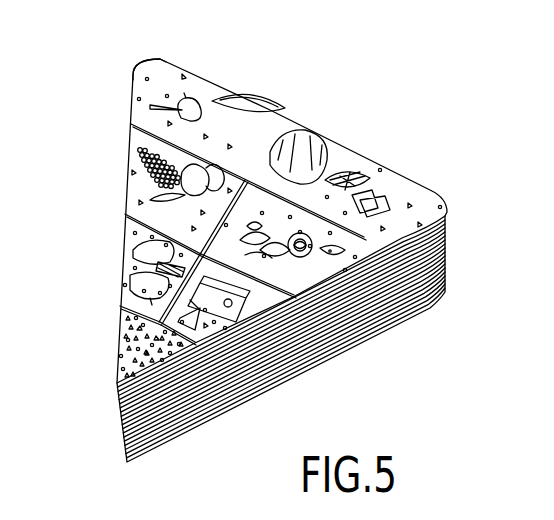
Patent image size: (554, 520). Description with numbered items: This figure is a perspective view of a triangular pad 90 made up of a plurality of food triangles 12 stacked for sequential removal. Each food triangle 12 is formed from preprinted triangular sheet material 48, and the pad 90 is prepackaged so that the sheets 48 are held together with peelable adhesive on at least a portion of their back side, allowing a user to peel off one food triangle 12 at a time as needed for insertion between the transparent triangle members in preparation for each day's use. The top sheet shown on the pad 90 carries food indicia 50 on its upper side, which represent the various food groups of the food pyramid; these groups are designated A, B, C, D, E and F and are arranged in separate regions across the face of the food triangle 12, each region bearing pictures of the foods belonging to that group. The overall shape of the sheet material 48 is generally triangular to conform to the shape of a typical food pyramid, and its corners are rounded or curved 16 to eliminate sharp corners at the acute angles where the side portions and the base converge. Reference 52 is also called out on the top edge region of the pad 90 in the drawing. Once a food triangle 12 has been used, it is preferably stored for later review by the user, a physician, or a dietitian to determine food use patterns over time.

The food triangle 12 is at (281, 236).
The rounded corner 16 is at (365, 238).
The preprinted triangular sheet material 48 is at (137, 200).
The food indicia 50 is at (187, 172).
The binding edge corner 52 is at (133, 73).
The triangular pad 90 is at (287, 363).
The food group A is at (167, 80).
The food group B is at (308, 273).
The food group C is at (145, 150).
The food group D is at (205, 327).
The food group E is at (143, 268).
The food group F is at (137, 353).